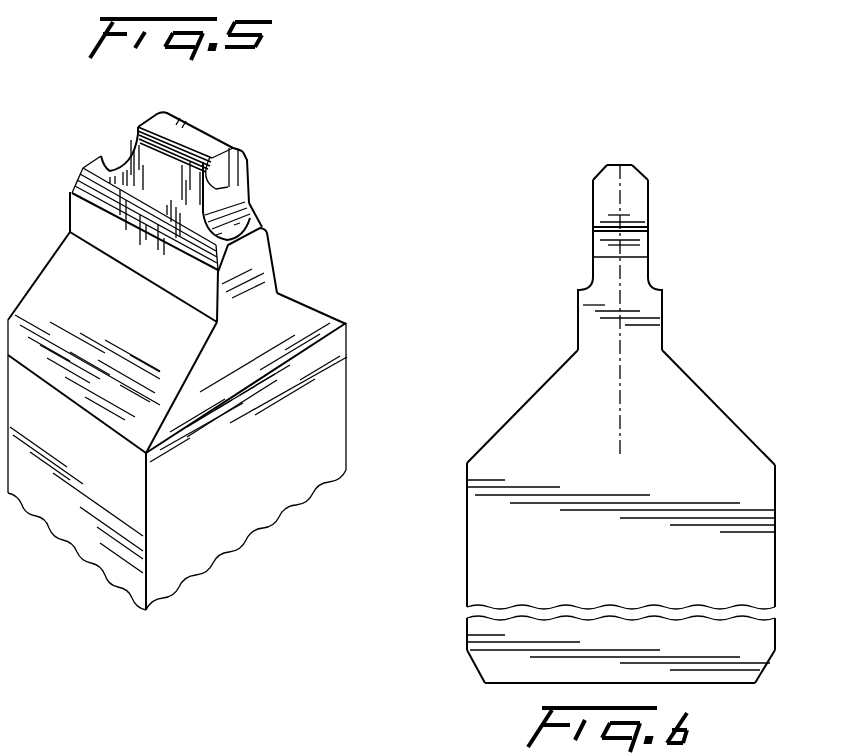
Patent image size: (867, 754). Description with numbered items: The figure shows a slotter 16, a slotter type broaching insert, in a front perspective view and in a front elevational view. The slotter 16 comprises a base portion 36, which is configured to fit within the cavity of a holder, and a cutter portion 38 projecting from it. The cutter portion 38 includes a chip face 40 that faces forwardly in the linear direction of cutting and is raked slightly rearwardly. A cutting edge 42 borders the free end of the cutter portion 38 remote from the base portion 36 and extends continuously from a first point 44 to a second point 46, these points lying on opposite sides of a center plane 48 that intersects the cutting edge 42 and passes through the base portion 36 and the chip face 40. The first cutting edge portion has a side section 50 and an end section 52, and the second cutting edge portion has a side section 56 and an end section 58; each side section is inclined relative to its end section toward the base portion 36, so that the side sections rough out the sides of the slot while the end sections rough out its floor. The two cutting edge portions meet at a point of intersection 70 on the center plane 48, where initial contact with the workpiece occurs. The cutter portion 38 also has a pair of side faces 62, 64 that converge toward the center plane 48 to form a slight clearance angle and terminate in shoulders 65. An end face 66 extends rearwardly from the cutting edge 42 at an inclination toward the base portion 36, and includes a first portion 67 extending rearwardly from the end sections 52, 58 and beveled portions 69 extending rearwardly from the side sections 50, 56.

In FIG. 5, the slotter 16 is at (328, 272).
In FIG. 6, the slotter 16 is at (719, 368).
In FIG. 5, the base portion 36 is at (177, 421).
In FIG. 6, the base portion 36 is at (463, 573).
In FIG. 5, the cutter portion 38 is at (252, 170).
In FIG. 6, the cutter portion 38 is at (655, 268).
In FIG. 5, the chip face 40 is at (241, 214).
In FIG. 6, the chip face 40 is at (593, 236).
In FIG. 5, the cutting edge 42 is at (257, 140).
In FIG. 6, the cutting edge 42 is at (622, 154).
In FIG. 6, the first point 44 is at (652, 182).
In FIG. 5, the second point 46 is at (196, 185).
In FIG. 6, the second point 46 is at (587, 177).
In FIG. 6, the center plane 48 is at (620, 408).
In FIG. 6, the side section 50 is at (645, 170).
In FIG. 6, the end section 52 is at (630, 163).
In FIG. 5, the side section 56 is at (205, 168).
In FIG. 6, the side section 56 is at (597, 173).
In FIG. 5, the end section 58 is at (244, 198).
In FIG. 6, the end section 58 is at (612, 157).
In FIG. 6, the side face 62 is at (650, 227).
In FIG. 5, the side face 64 is at (147, 191).
In FIG. 6, the side face 64 is at (592, 212).
In FIG. 6, the shoulders 65 is at (577, 283).
In FIG. 5, the end face 66 is at (192, 126).
In FIG. 5, the first portion 67 is at (163, 125).
In FIG. 5, the beveled portions 69 is at (136, 134).
In FIG. 5, the point of intersection 70 is at (239, 150).